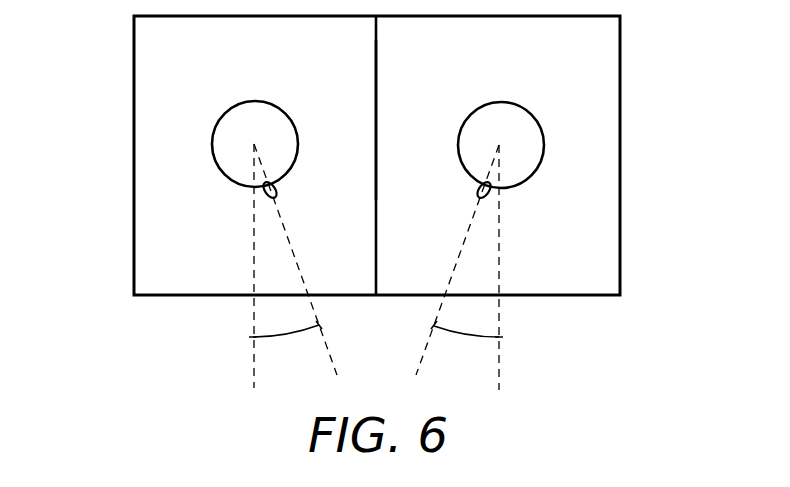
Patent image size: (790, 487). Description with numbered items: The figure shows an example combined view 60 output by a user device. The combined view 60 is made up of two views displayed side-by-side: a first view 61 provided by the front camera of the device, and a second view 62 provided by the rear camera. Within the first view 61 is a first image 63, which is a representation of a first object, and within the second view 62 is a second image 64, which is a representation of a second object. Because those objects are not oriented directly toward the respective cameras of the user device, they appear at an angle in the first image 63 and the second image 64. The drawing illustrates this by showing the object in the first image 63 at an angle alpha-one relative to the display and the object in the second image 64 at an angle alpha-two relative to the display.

The combined view 60 is at (578, 357).
The first view 61 is at (120, 270).
The second view 62 is at (632, 270).
The first image 63 is at (247, 103).
The second image 64 is at (500, 102).